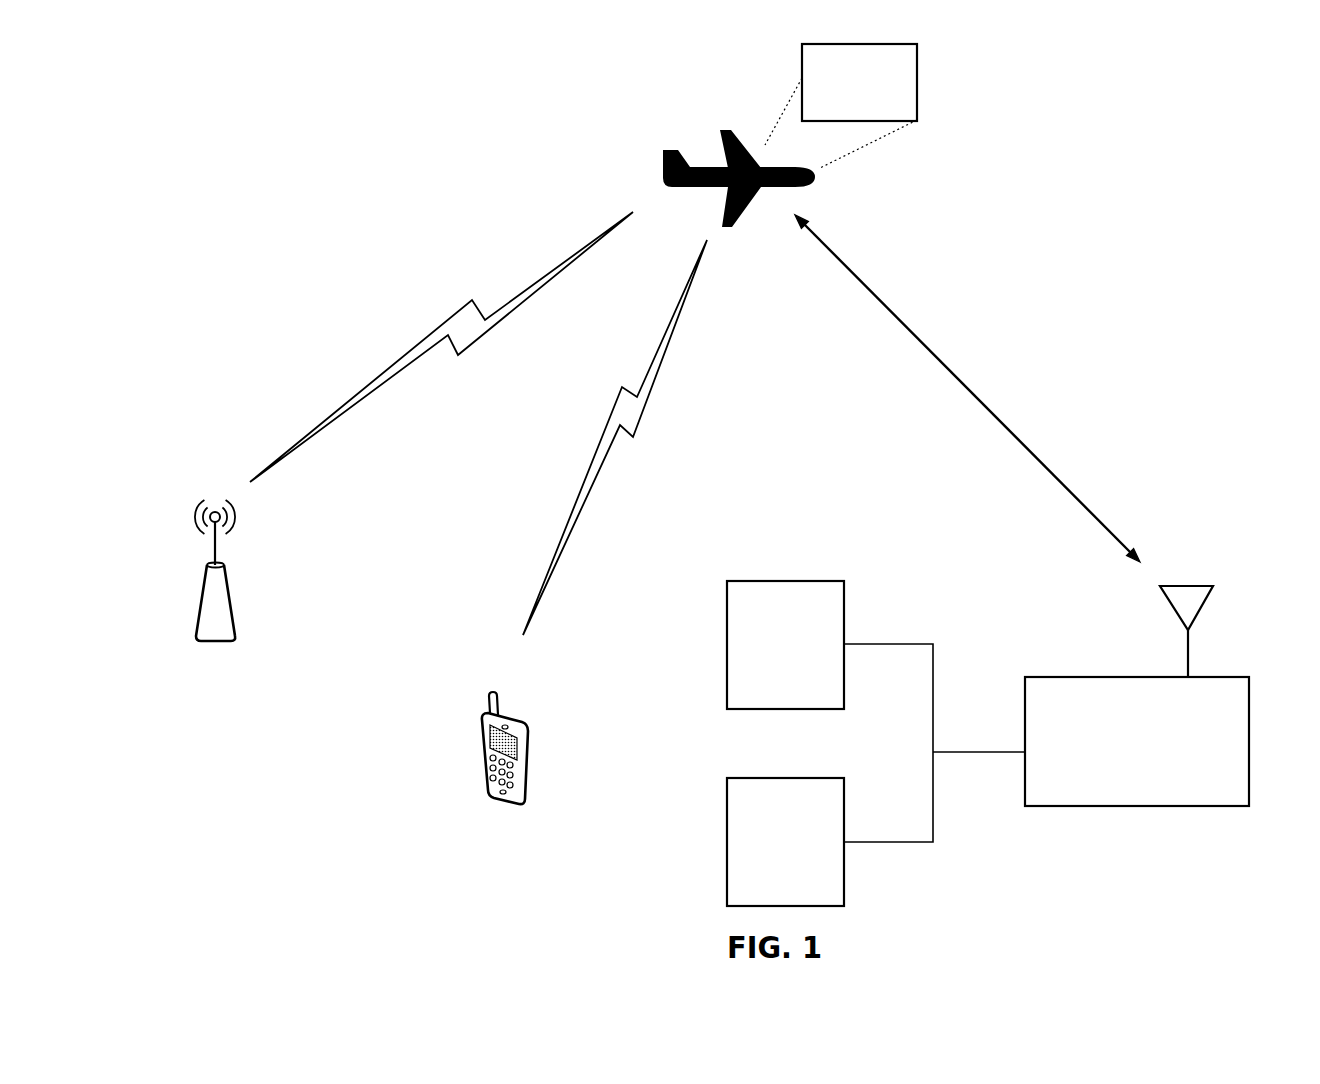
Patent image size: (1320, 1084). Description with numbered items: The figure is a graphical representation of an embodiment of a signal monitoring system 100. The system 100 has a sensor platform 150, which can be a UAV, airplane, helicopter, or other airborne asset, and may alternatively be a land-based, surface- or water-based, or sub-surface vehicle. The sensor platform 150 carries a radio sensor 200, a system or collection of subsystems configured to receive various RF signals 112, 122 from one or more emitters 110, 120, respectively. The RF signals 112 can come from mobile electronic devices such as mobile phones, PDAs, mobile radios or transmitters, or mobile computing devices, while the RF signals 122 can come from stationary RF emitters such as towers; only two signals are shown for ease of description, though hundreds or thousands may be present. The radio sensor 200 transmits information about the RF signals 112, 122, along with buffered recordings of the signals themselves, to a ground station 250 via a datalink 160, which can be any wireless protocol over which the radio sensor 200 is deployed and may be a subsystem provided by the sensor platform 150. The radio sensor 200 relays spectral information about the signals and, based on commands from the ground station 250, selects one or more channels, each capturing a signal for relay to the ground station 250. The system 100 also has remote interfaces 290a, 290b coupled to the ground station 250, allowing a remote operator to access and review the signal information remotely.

The signal monitoring system 100 is at (1123, 107).
The emitter 110 is at (488, 700).
The RF signals 112 is at (615, 423).
The emitter 120 is at (198, 611).
The RF signals 122 is at (470, 328).
The sensor platform 150 is at (665, 170).
The datalink 160 is at (984, 406).
The radio sensor 200 is at (915, 88).
The ground station 250 is at (1214, 690).
The remote interface 290a is at (800, 592).
The remote interface 290b is at (800, 778).